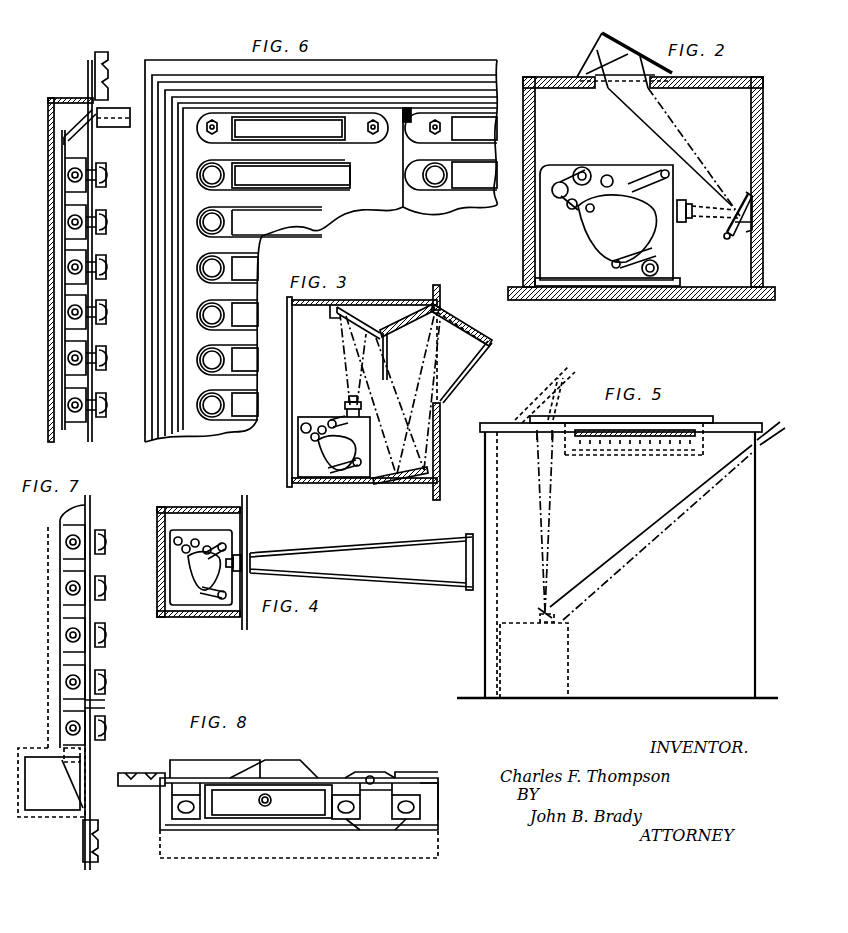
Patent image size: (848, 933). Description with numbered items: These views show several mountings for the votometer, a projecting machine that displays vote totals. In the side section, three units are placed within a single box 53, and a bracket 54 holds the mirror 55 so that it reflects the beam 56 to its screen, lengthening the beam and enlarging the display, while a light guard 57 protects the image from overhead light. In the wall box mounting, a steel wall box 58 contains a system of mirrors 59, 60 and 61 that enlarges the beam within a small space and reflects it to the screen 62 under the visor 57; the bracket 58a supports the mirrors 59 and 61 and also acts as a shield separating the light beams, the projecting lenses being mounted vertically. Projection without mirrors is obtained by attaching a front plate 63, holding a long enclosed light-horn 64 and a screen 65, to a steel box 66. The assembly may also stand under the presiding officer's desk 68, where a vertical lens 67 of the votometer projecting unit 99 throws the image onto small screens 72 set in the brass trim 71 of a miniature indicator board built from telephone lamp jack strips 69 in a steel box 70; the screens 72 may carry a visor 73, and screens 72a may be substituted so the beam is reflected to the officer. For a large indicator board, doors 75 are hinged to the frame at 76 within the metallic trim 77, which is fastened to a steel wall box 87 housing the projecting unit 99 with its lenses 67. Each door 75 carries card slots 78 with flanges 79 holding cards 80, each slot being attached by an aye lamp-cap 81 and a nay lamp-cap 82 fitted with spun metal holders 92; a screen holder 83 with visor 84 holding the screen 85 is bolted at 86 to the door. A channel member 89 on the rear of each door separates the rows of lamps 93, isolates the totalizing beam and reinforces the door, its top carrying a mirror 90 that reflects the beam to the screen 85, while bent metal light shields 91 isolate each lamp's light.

In FIG. 2, the box 53 is at (523, 223).
In FIG. 5, the box 53 is at (568, 650).
In FIG. 2, the bracket 54 is at (738, 237).
In FIG. 2, the mirror 55 is at (746, 195).
In FIG. 2, the beam 56 is at (680, 130).
In FIG. 5, the beam 56 is at (661, 521).
In FIG. 2, the light guard 57 is at (606, 38).
In FIG. 3, the light guard 57 is at (478, 334).
In FIG. 3, the steel wall box 58 is at (400, 302).
In FIG. 3, the bracket 58a is at (382, 350).
In FIG. 3, the mirror 59 is at (332, 322).
In FIG. 3, the mirror 60 is at (416, 487).
In FIG. 3, the mirror 61 is at (420, 322).
In FIG. 3, the screen 62 is at (468, 360).
In FIG. 4, the front plate 63 is at (248, 528).
In FIG. 4, the light-horn 64 is at (418, 540).
In FIG. 4, the screen 65 is at (466, 572).
In FIG. 4, the steel box 66 is at (178, 512).
In FIG. 2, the vertical lens 67 is at (685, 224).
In FIG. 3, the vertical lens 67 is at (344, 406).
In FIG. 5, the vertical lens 67 is at (538, 612).
In FIG. 4, the vertical lens 67 is at (245, 556).
In FIG. 7, the vertical lens 67 is at (81, 754).
In FIG. 8, the vertical lens 67 is at (272, 800).
In FIG. 5, the presiding officer's desk 68 is at (732, 424).
In FIG. 5, the telephone lamp jack strips 69 is at (648, 444).
In FIG. 5, the steel box 70 is at (688, 445).
In FIG. 5, the brass trim 71 is at (610, 444).
In FIG. 5, the screens 72 is at (537, 440).
In FIG. 5, the screens 72a is at (562, 386).
In FIG. 5, the visor 73 is at (519, 418).
In FIG. 6, the door 75 is at (365, 212).
In FIG. 7, the door 75 is at (105, 703).
In FIG. 8, the door 75 is at (190, 782).
In FIG. 6, the hinge 76 is at (198, 104).
In FIG. 8, the hinge 76 is at (420, 774).
In FIG. 6, the metallic trim 77 is at (97, 54).
In FIG. 7, the metallic trim 77 is at (118, 810).
In FIG. 8, the metallic trim 77 is at (118, 790).
In FIG. 6, the card slot 78 is at (368, 164).
In FIG. 8, the card slot 78 is at (330, 783).
In FIG. 6, the flanges 79 is at (225, 333).
In FIG. 6, the cards 80 is at (222, 395).
In FIG. 6, the aye lamp-cap 81 is at (200, 178).
In FIG. 8, the aye lamp-cap 81 is at (388, 772).
In FIG. 6, the nay lamp-cap 82 is at (380, 190).
In FIG. 8, the nay lamp-cap 82 is at (430, 778).
In FIG. 6, the screen holder 83 is at (205, 150).
In FIG. 8, the screen holder 83 is at (224, 777).
In FIG. 6, the visor 84 is at (110, 108).
In FIG. 8, the visor 84 is at (270, 778).
In FIG. 6, the screen 85 is at (90, 128).
In FIG. 7, the screen 85 is at (87, 682).
In FIG. 8, the screen 85 is at (270, 779).
In FIG. 6, the bolt 86 is at (205, 127).
In FIG. 6, the steel wall box 87 is at (48, 243).
In FIG. 7, the steel wall box 87 is at (82, 833).
In FIG. 6, the channel member 89 is at (68, 405).
In FIG. 7, the channel member 89 is at (62, 583).
In FIG. 8, the channel member 89 is at (163, 828).
In FIG. 6, the mirror 90 is at (92, 132).
In FIG. 6, the bent metal light shields 91 is at (75, 328).
In FIG. 7, the bent metal light shields 91 is at (72, 656).
In FIG. 8, the bent metal light shields 91 is at (350, 819).
In FIG. 6, the spun metal holders 92 is at (106, 405).
In FIG. 8, the spun metal holders 92 is at (370, 775).
In FIG. 6, the indicator board lamps 93 is at (68, 172).
In FIG. 7, the indicator board lamps 93 is at (66, 632).
In FIG. 8, the indicator board lamps 93 is at (182, 795).
In FIG. 2, the votometer projecting unit 99 is at (600, 165).
In FIG. 3, the votometer projecting unit 99 is at (298, 452).
In FIG. 5, the votometer projecting unit 99 is at (497, 668).
In FIG. 4, the votometer projecting unit 99 is at (188, 534).
In FIG. 7, the votometer projecting unit 99 is at (36, 760).
In FIG. 8, the votometer projecting unit 99 is at (288, 835).